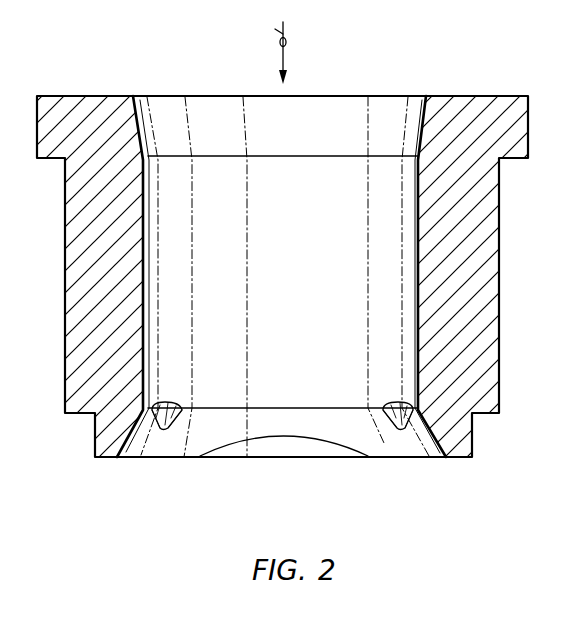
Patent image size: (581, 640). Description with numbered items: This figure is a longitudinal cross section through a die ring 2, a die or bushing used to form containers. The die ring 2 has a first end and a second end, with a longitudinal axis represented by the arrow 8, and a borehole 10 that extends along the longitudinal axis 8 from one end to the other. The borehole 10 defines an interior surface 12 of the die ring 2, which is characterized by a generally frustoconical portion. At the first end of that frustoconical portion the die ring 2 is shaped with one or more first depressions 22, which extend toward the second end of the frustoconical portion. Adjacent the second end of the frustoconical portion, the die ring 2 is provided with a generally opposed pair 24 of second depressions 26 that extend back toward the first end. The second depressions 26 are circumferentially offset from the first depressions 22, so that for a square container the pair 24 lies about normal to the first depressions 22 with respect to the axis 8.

The die ring 2 is at (462, 80).
The longitudinal axis 8 is at (283, 34).
The borehole 10 is at (339, 108).
The interior surface 12 is at (418, 320).
The first depression 22 is at (294, 448).
The generally opposed pair of second depressions 24 is at (167, 430).
The second depression 26 is at (170, 403).